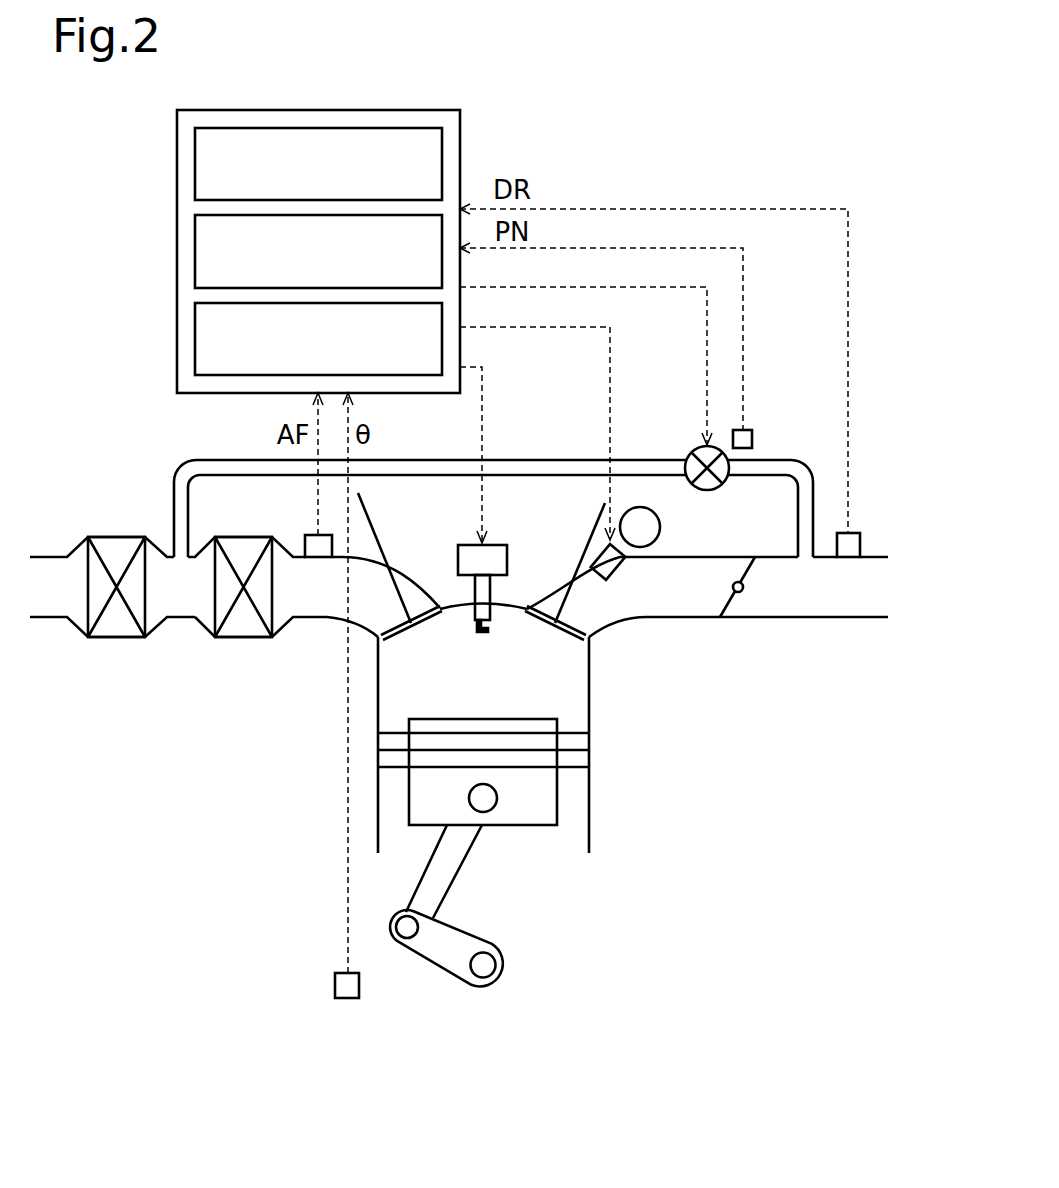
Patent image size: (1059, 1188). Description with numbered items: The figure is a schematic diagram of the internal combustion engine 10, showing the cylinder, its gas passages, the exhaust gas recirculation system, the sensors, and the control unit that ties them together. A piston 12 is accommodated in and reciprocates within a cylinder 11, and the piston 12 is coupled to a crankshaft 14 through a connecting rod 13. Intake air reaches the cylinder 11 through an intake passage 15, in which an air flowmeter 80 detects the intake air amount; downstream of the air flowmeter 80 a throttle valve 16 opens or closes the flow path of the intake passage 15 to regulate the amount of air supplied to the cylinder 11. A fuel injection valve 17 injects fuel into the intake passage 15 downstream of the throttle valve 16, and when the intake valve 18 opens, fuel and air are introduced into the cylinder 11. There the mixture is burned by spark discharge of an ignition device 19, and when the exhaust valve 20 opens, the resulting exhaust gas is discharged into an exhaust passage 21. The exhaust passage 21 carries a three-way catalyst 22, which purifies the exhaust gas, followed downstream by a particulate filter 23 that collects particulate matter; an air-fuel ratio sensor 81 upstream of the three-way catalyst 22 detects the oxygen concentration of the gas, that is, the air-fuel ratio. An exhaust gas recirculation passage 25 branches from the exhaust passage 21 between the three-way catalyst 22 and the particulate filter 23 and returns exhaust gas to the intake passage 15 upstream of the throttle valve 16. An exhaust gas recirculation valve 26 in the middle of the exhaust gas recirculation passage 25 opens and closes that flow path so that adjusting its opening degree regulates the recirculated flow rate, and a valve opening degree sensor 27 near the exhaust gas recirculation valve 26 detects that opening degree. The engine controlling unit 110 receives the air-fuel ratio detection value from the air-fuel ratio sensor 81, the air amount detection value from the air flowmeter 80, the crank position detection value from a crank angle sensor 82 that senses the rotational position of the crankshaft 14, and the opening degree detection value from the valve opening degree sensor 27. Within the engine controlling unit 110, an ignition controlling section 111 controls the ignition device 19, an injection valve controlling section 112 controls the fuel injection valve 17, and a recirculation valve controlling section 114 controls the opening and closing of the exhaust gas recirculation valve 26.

The internal combustion engine 10 is at (187, 842).
The cylinder 11 is at (589, 780).
The piston 12 is at (557, 810).
The connecting rod 13 is at (452, 870).
The crankshaft 14 is at (503, 962).
The intake passage 15 is at (707, 620).
The throttle valve 16 is at (755, 567).
The fuel injection valve 17 is at (620, 575).
The intake valve 18 is at (563, 635).
The ignition device 19 is at (519, 537).
The exhaust valve 20 is at (400, 635).
The exhaust passage 21 is at (310, 620).
The three-way catalyst 22 is at (243, 640).
The particulate filter 23 is at (115, 640).
The exhaust gas recirculation passage 25 is at (661, 460).
The exhaust gas recirculation valve 26 is at (707, 492).
The valve opening degree sensor 27 is at (752, 440).
The air flowmeter 80 is at (850, 533).
The air-fuel ratio sensor 81 is at (303, 540).
The crank angle sensor 82 is at (347, 998).
The engine controlling unit 110 is at (353, 110).
The ignition controlling section 111 is at (195, 163).
The injection valve controlling section 112 is at (195, 250).
The recirculation valve controlling section 114 is at (195, 340).